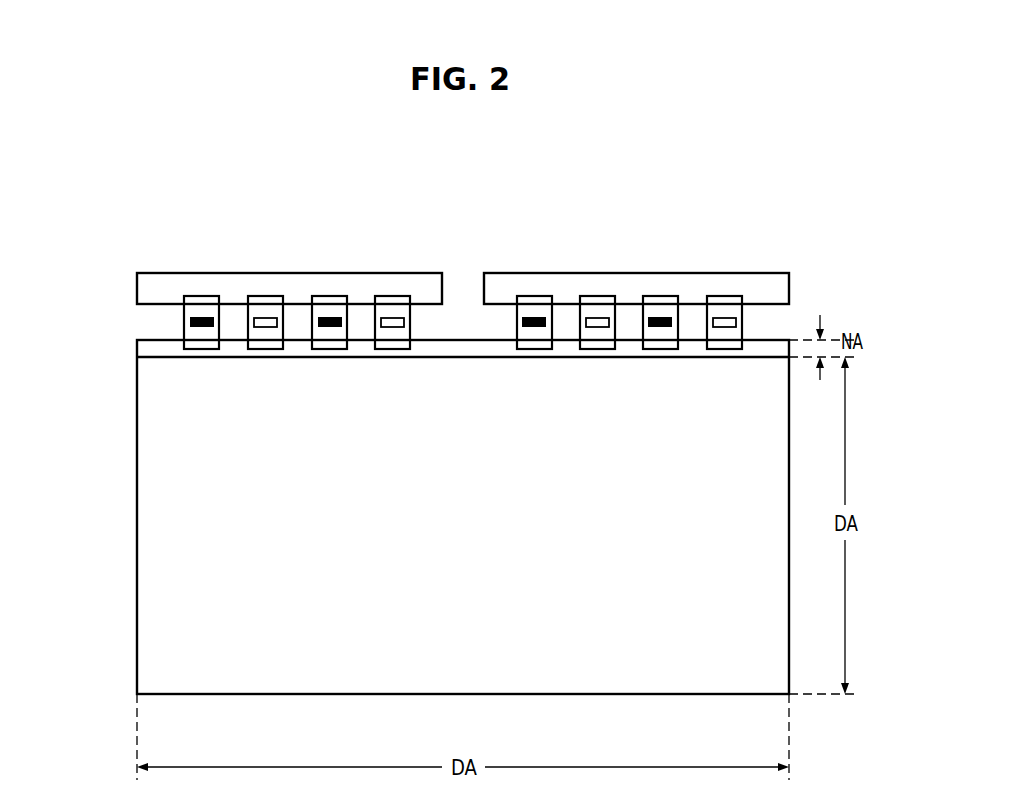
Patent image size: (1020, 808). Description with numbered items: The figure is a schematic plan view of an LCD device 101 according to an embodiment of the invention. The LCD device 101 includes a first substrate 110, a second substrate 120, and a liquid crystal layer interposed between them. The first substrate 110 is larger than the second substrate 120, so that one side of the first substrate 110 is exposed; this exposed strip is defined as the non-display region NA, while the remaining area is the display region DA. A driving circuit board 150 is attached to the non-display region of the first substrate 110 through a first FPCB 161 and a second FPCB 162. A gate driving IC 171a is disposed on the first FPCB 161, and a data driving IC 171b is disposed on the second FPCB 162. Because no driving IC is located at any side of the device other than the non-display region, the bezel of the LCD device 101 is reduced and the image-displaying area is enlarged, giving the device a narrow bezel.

The LCD device 101 is at (766, 194).
The first substrate 110 is at (140, 337).
The second substrate 120 is at (459, 345).
The driving circuit board 150 is at (426, 285).
The first FPCB 161 is at (268, 310).
The second FPCB 162 is at (201, 310).
The gate driving IC 171a is at (387, 310).
The data driving IC 171b is at (325, 310).